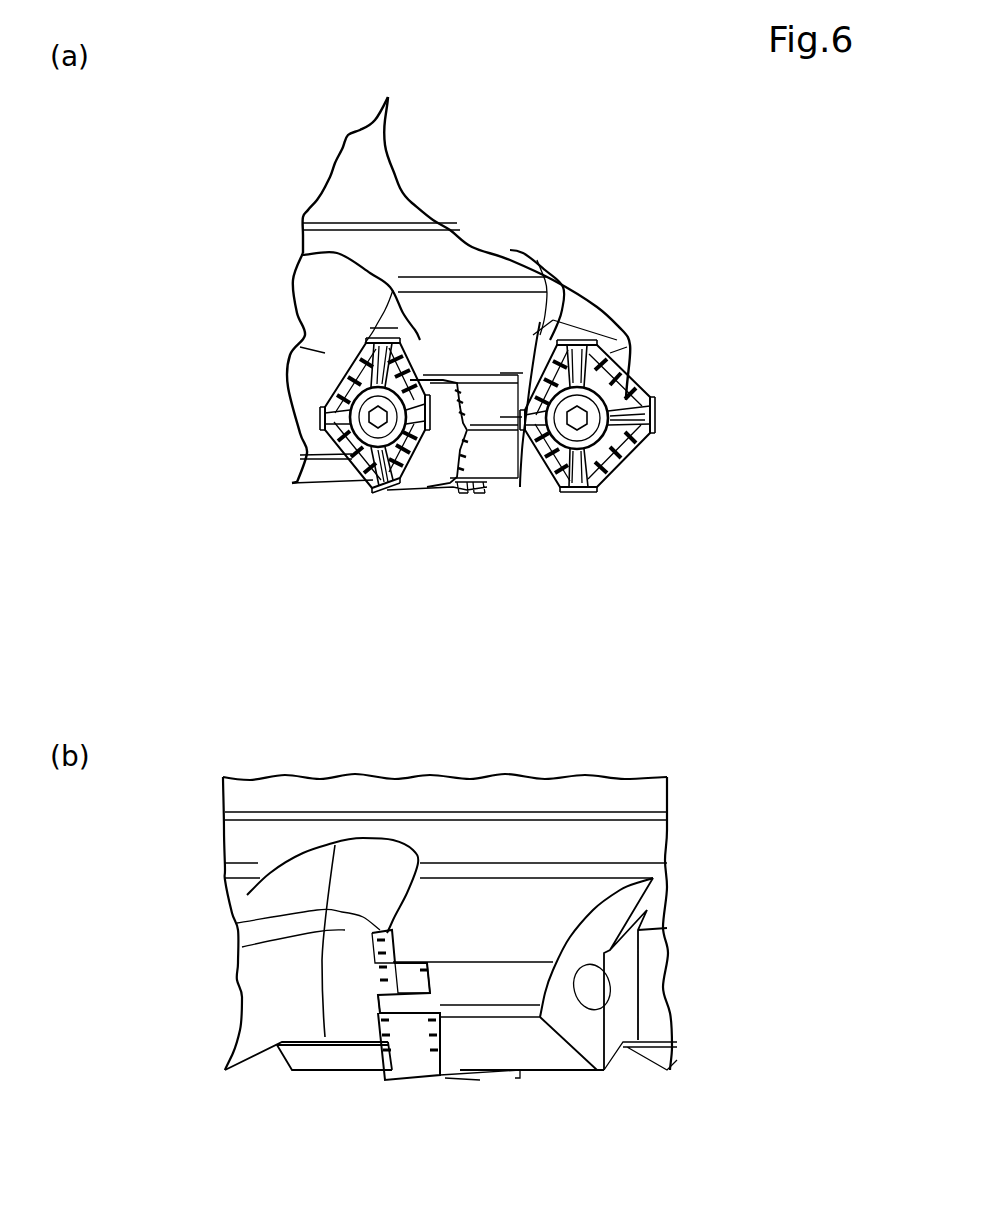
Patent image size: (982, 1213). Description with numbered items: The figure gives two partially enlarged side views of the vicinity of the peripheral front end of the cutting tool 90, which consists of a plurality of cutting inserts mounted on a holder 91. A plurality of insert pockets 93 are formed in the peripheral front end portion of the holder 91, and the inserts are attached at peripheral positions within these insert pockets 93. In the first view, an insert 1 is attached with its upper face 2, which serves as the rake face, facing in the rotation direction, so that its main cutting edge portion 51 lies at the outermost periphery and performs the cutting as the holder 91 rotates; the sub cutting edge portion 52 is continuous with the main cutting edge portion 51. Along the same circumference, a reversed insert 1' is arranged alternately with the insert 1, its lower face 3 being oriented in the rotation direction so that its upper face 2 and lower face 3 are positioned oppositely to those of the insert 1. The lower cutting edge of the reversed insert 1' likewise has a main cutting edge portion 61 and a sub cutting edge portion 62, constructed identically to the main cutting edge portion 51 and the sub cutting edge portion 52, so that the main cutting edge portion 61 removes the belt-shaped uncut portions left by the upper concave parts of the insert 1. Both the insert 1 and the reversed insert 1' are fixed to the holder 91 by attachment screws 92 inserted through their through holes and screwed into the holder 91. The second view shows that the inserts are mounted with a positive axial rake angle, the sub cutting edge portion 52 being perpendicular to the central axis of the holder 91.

The cutting tool 90 is at (592, 198).
The holder 91 is at (368, 172).
The insert pocket 93 is at (610, 350).
The cutting insert 1 is at (520, 736).
The reversed insert 1' is at (331, 455).
The upper face 2 is at (625, 432).
The lower face 3 is at (404, 481).
The main cutting edge portion 51 is at (615, 450).
The sub cutting edge portion 52 is at (577, 495).
The main cutting edge portion 61 is at (407, 472).
The sub cutting edge portion 62 is at (387, 493).
The attachment screw 92 is at (648, 423).